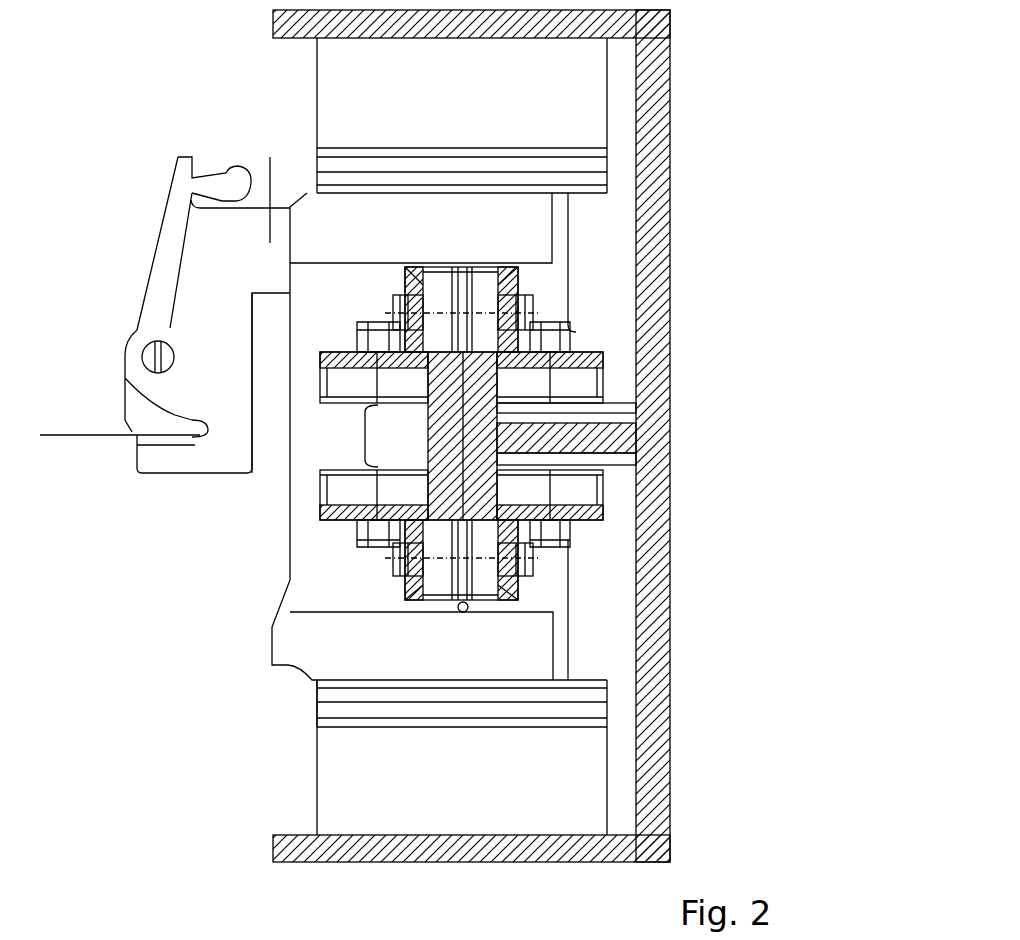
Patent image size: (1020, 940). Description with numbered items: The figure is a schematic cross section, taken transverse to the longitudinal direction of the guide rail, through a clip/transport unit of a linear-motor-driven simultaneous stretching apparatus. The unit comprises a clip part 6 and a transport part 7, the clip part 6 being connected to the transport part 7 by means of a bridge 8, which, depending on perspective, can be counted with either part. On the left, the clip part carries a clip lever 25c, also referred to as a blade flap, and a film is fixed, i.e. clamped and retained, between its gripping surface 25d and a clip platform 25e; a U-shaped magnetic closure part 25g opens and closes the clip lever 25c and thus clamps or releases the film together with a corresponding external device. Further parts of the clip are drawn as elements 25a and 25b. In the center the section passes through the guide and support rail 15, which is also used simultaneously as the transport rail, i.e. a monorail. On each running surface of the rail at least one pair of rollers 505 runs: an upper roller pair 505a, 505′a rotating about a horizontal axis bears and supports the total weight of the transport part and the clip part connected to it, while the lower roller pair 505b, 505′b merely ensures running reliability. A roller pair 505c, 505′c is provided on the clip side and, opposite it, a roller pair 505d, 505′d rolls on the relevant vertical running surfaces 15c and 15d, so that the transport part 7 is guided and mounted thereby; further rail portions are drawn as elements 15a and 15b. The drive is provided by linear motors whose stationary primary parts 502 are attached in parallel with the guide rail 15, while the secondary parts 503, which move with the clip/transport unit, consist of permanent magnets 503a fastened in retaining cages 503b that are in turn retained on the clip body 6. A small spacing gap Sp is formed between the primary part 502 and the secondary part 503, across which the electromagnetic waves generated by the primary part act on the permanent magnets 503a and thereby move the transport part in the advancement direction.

The clip part 6 is at (188, 105).
The transport part 7 is at (592, 290).
The bridge 8 is at (244, 194).
The guide and support rail 15 is at (640, 433).
The upper carrier web 15a is at (565, 333).
The lower carrier web 15b is at (533, 552).
The vertical running surface 15c is at (428, 432).
The vertical running surface 15d is at (610, 407).
The lever base 25a is at (185, 397).
The pivot pin 25b is at (141, 353).
The clip lever 25c is at (150, 263).
The gripping surface 25d is at (143, 418).
The clip platform 25e is at (190, 437).
The U-shaped magnetic closure part 25g is at (213, 170).
The primary part 502 is at (587, 92).
The secondary part 503 is at (300, 707).
The permanent magnet 503a is at (597, 165).
The retaining cage 503b is at (592, 178).
The pair of rollers 505 is at (470, 273).
The upper roller pair 505a is at (462, 309).
The upper roller bolt (second) 505′a is at (461, 276).
The roller pair 505b is at (485, 590).
The lower roller bolt (second) 505′b is at (461, 592).
The roller pair 505c is at (353, 377).
The left roller (second) 505′c is at (322, 516).
The roller pair 505d is at (587, 490).
The right roller (second) 505′d is at (587, 375).
The spacing gap Sp is at (600, 150).